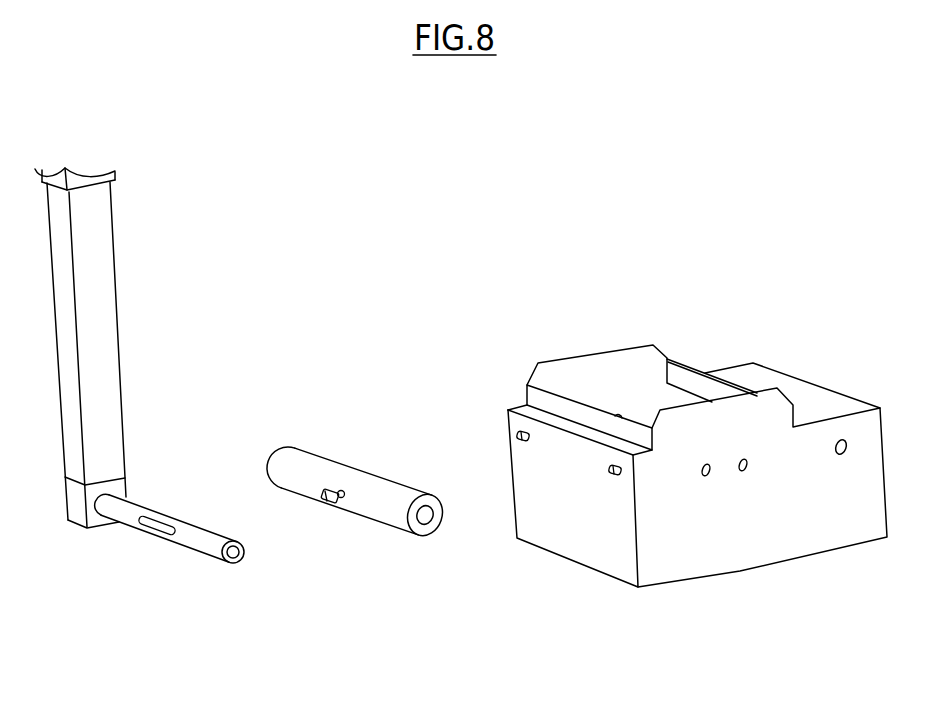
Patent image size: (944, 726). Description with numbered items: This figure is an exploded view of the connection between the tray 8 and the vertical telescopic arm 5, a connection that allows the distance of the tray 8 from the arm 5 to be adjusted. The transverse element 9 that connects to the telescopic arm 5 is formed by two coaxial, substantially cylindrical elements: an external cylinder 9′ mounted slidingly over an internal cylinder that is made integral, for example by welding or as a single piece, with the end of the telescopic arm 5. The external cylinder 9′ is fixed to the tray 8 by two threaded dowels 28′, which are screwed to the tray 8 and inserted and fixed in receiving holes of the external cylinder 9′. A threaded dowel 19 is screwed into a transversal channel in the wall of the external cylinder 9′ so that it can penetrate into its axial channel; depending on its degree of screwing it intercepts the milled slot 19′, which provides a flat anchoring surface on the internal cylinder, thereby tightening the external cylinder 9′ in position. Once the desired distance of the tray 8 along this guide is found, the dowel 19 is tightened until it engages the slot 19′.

The telescopic arm 5 is at (100, 356).
The tray 8 is at (725, 555).
The transverse element 9 is at (275, 563).
The external cylinder 9′ is at (377, 510).
The threaded dowel 19 is at (332, 503).
The slot 19′ is at (148, 528).
The threaded dowels 28′ is at (523, 441).